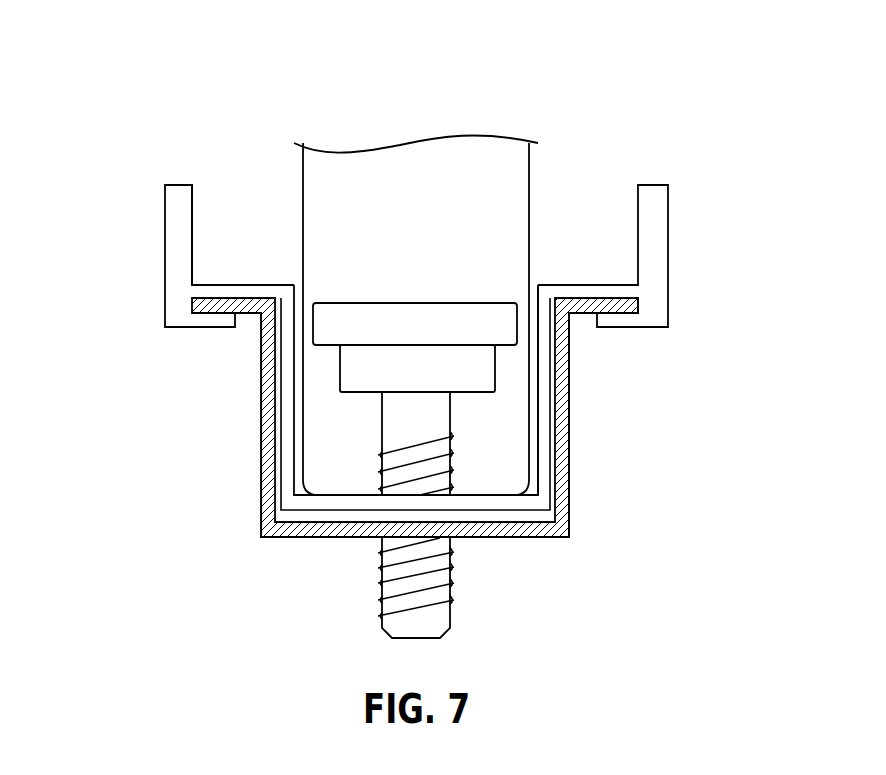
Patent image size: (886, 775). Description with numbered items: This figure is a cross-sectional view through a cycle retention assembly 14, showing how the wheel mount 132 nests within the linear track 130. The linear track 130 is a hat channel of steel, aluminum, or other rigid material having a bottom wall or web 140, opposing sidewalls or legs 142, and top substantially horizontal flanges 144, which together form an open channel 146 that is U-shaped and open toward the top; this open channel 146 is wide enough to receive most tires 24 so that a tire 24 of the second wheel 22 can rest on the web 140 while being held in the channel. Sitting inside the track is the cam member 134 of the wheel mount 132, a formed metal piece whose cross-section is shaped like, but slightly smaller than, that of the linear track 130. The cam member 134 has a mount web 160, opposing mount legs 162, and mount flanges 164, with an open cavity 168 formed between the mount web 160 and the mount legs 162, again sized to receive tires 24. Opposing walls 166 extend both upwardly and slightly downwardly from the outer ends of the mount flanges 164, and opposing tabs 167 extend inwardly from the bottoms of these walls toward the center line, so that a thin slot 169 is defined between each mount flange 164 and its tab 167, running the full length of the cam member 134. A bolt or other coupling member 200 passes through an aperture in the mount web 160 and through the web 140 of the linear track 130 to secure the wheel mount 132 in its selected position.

The cycle retention assembly 14 is at (108, 98).
The second wheel 22 is at (498, 160).
The tire 24 is at (333, 175).
The coupling member 200 is at (470, 320).
The mount flange 164 is at (561, 284).
The wheel mount 132 is at (668, 203).
The thin slot 169 is at (597, 297).
The flange 144 is at (618, 308).
The opposing wall 166 is at (655, 288).
The opposing tab 167 is at (622, 328).
The leg 142 is at (570, 412).
The linear track 130 is at (558, 458).
The mount leg 162 is at (542, 465).
The mount web 160 is at (487, 502).
The web 140 is at (528, 537).
The open channel 146 is at (268, 452).
The cam member 134 is at (177, 277).
The open cavity 168 is at (242, 237).